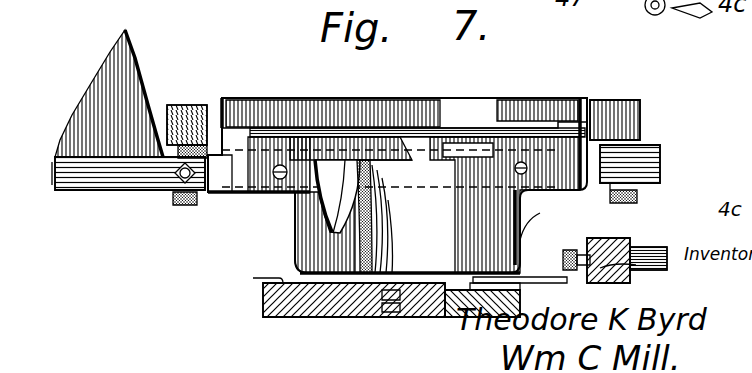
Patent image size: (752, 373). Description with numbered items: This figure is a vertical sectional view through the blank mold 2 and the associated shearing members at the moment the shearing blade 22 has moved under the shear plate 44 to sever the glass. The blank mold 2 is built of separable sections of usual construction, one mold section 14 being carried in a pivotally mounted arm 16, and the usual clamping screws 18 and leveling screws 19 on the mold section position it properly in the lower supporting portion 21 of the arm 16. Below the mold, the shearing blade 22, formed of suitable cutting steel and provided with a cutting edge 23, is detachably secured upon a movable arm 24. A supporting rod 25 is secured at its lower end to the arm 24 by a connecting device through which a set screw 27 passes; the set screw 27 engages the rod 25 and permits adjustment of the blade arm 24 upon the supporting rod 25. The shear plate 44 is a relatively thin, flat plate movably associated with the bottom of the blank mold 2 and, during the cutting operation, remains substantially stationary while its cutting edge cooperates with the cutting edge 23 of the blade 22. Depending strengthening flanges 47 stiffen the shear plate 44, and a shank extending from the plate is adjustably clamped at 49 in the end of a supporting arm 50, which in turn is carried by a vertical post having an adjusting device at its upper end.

The blank mold 2 is at (323, 80).
The blank mold section 14 is at (483, 110).
The arm 16 is at (127, 137).
The clamping screws 18 is at (190, 147).
The leveling screws 19 is at (637, 197).
The lower supporting portion 21 is at (152, 183).
The shearing blade 22 is at (387, 290).
The cutting edge 23 is at (451, 313).
The movable arm 24 is at (241, 267).
The supporting rod 25 is at (427, 257).
The set screw 27 is at (180, 2).
The shear plate 44 is at (548, 224).
The strengthening flanges 47 is at (523, 277).
The clamp 49 is at (677, 5).
The supporting arm 50 is at (598, 250).